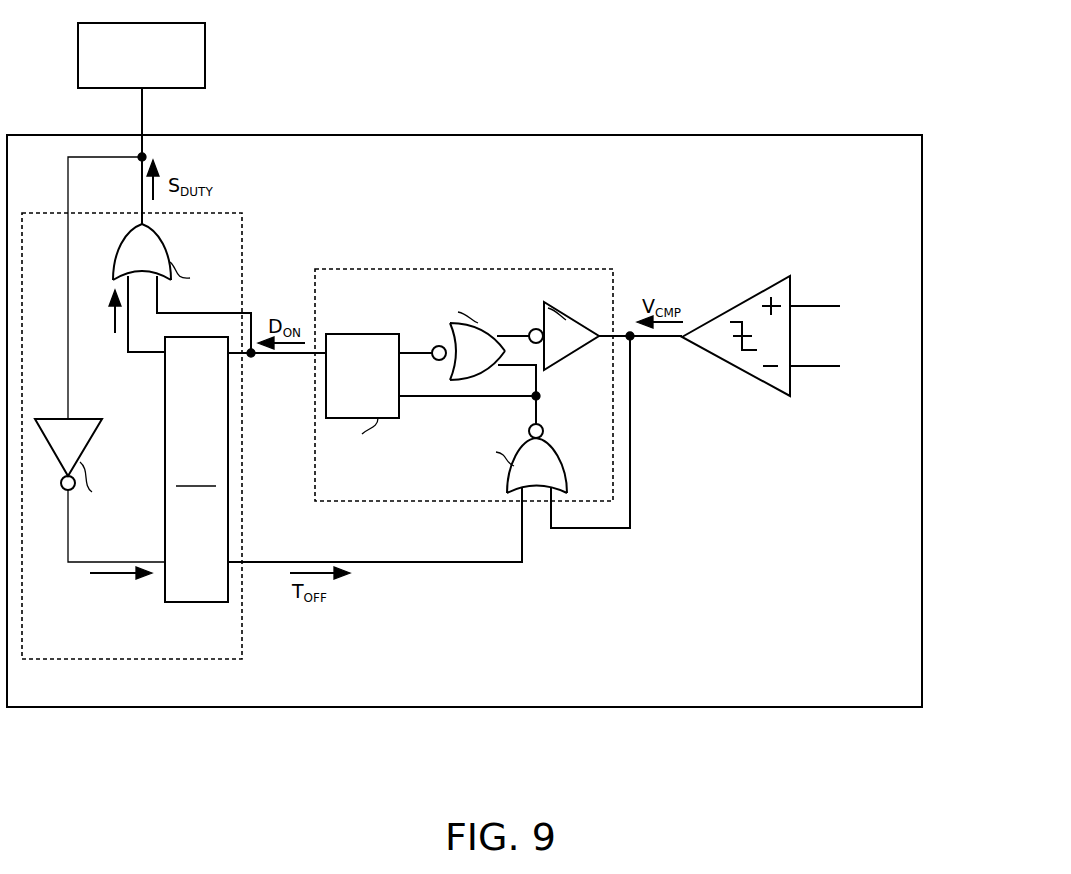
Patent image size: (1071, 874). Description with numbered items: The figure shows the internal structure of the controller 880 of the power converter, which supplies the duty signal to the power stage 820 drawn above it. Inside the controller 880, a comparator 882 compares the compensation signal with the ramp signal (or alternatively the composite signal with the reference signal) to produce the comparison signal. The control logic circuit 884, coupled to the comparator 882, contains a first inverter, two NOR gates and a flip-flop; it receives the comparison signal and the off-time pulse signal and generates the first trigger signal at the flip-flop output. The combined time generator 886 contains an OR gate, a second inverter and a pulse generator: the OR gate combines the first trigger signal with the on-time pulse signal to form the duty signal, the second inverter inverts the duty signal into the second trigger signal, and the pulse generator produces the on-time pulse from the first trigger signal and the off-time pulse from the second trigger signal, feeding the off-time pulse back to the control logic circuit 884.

The power stage 820 is at (125, 66).
The controller 880 is at (813, 135).
The comparator 882 is at (764, 287).
The control logic circuit 884 is at (536, 269).
The combined time generator 886 is at (242, 252).